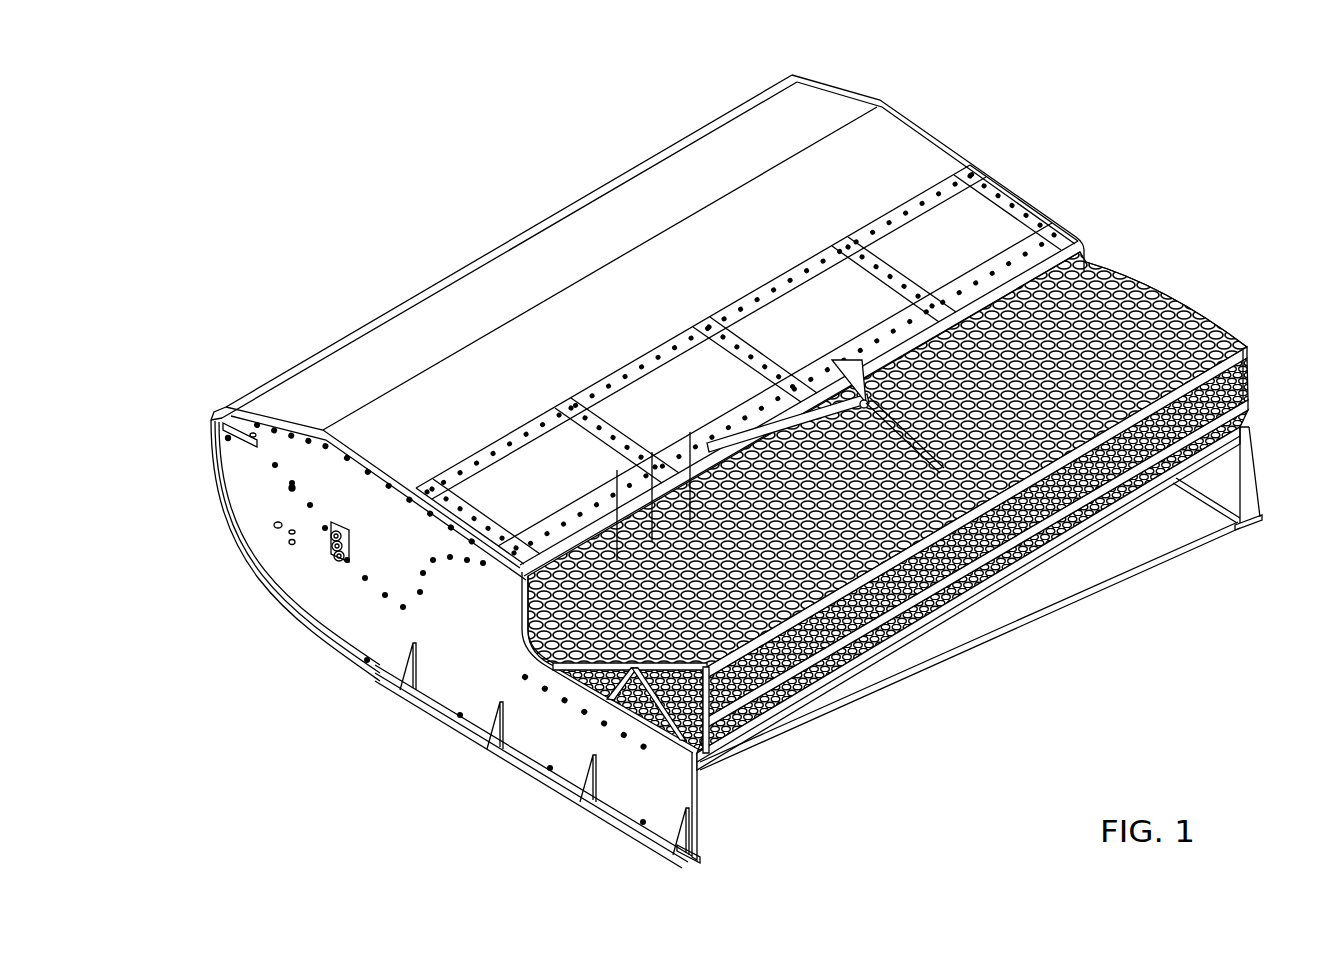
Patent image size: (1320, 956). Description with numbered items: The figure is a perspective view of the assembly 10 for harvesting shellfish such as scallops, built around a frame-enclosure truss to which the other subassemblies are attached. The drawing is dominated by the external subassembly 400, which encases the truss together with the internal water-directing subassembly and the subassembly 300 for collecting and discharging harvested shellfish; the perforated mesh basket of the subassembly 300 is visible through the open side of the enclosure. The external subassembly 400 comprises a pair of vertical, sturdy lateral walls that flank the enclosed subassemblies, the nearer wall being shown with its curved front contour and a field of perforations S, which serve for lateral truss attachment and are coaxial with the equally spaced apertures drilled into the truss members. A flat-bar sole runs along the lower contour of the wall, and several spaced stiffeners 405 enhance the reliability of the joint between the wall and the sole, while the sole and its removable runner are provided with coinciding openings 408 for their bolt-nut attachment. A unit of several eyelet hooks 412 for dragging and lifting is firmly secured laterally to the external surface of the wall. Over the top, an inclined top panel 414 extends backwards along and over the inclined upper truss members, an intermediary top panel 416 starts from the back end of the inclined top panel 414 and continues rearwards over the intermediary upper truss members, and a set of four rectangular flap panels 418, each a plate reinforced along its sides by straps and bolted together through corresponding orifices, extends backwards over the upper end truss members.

The assembly 10 is at (508, 163).
The subassembly for collecting and discharging harvested shellfish 300 is at (1132, 282).
The external subassembly 400 is at (987, 150).
The stiffeners 405 is at (506, 703).
The openings 408 is at (370, 665).
The eyelet hooks 412 is at (331, 556).
The inclined top panel 414 is at (495, 290).
The intermediary top panel 416 is at (893, 153).
The flap panel 418 is at (982, 220).
The perforation S is at (289, 491).